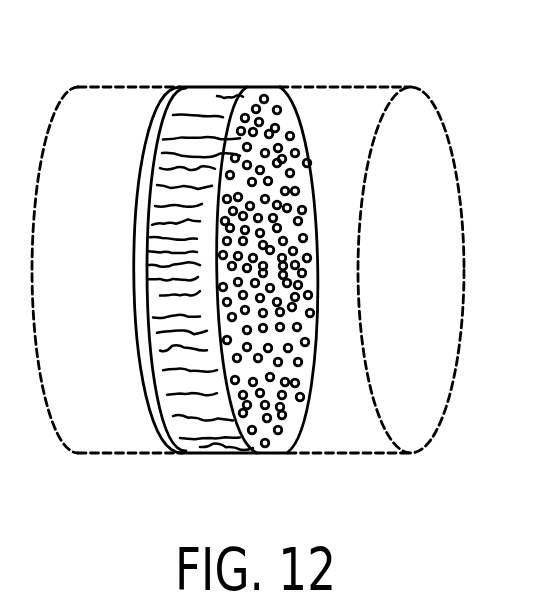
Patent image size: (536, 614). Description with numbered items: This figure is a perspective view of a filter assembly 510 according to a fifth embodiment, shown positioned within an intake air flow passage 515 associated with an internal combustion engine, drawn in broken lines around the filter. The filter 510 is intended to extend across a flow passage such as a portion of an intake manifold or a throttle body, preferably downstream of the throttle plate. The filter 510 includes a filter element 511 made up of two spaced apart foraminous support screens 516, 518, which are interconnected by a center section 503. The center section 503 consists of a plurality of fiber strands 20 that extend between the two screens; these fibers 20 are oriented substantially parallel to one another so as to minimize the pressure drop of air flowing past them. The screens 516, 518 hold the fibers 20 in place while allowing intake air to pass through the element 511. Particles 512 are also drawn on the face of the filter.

The fiber strands 20 is at (225, 259).
The center section 503 is at (196, 100).
The filter assembly 510 is at (330, 106).
The filter element 511 is at (147, 170).
The adsorbent particles 512 is at (263, 378).
The intake air flow passage 515 is at (349, 452).
The foraminous support screen 516 is at (248, 88).
The foraminous support screen 518 is at (143, 323).